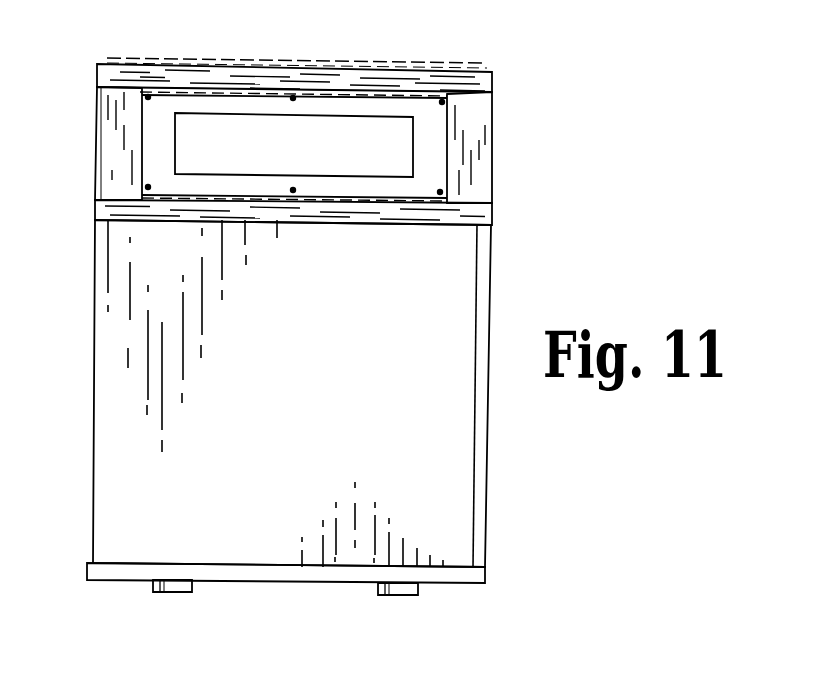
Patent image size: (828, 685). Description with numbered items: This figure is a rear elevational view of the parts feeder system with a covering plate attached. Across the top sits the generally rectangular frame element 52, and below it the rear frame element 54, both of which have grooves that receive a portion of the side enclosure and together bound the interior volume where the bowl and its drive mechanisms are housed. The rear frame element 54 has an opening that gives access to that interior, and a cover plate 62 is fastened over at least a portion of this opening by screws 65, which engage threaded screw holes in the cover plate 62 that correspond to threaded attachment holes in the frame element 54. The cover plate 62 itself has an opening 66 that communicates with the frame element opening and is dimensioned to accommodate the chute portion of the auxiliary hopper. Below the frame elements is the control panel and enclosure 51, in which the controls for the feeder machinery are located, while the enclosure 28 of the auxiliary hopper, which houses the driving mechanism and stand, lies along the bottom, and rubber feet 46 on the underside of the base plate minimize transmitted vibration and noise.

The enclosure 28 is at (312, 581).
The feet 46 is at (177, 593).
The control panel and enclosure 51 is at (261, 387).
The frame element 52 is at (370, 80).
The frame element 54 is at (124, 192).
The cover plate 62 is at (198, 100).
The screws 65 is at (295, 97).
The opening 66 is at (306, 156).